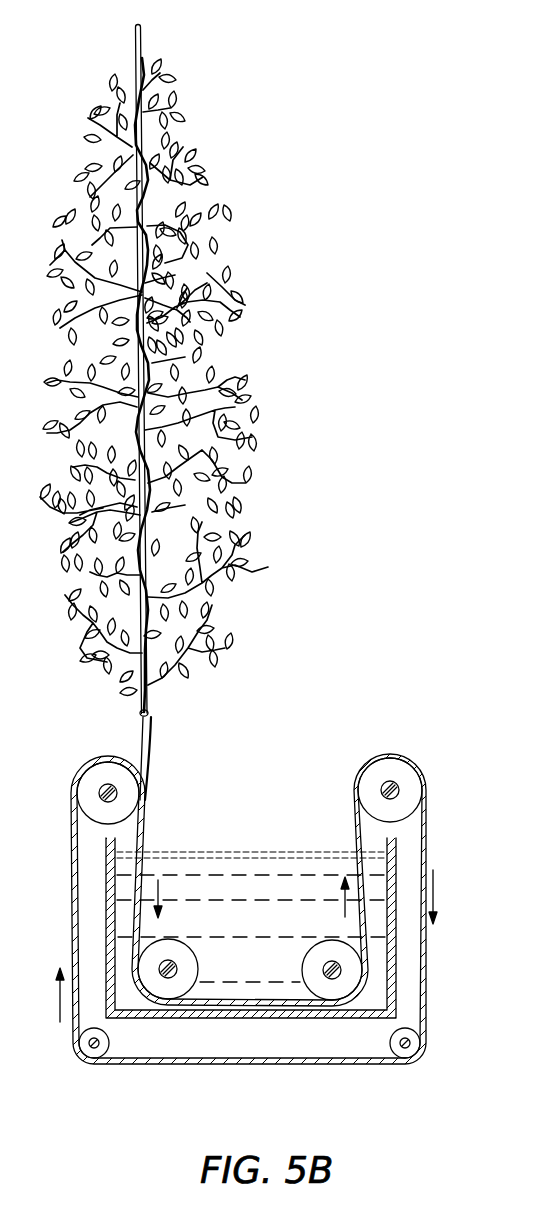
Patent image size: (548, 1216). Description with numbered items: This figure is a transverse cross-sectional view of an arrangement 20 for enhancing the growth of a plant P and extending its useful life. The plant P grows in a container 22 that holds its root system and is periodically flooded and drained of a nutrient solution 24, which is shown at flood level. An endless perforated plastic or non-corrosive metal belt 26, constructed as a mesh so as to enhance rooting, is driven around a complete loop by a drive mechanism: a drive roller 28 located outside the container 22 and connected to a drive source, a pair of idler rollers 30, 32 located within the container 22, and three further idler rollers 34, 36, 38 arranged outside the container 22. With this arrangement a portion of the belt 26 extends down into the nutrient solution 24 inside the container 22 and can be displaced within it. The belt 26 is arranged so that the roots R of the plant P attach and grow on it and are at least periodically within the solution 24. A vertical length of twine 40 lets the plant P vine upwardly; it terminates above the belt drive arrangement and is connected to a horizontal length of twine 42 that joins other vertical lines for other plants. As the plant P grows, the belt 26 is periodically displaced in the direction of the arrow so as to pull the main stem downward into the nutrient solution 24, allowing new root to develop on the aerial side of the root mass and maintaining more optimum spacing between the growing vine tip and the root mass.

The plant P is at (268, 567).
The vertical length of twine 40 is at (148, 692).
The horizontal length of twine 42 is at (140, 712).
The arrangement 20 is at (229, 784).
The container 22 is at (397, 937).
The nutrient solution 24 is at (303, 860).
The endless perforated belt 26 is at (72, 866).
The roots R is at (152, 856).
The drive roller 28 is at (87, 792).
The idler roller 34 is at (408, 797).
The idler roller 30 is at (175, 990).
The idler roller 32 is at (330, 992).
The idler roller 36 is at (413, 1043).
The idler roller 38 is at (100, 1050).